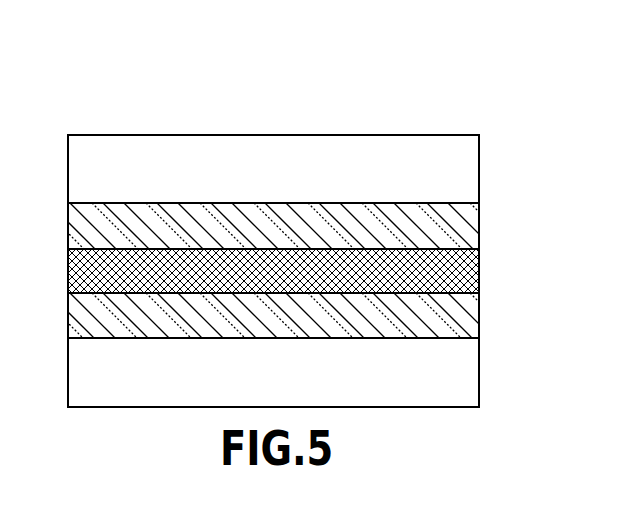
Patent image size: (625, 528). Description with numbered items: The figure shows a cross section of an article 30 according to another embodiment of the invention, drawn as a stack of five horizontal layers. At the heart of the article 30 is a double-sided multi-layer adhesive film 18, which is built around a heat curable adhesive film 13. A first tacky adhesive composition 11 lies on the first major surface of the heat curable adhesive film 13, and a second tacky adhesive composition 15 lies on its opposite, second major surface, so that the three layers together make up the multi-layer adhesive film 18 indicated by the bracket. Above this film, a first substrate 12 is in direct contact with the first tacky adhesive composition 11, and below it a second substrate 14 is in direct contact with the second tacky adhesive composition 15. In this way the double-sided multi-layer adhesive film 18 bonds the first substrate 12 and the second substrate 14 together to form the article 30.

The article 30 is at (223, 120).
The first substrate 12 is at (467, 171).
The first tacky adhesive composition 11 is at (467, 227).
The heat curable adhesive film 13 is at (467, 272).
The second tacky adhesive composition 15 is at (467, 312).
The second substrate 14 is at (467, 375).
The double-sided multi-layer adhesive film 18 is at (60, 203).